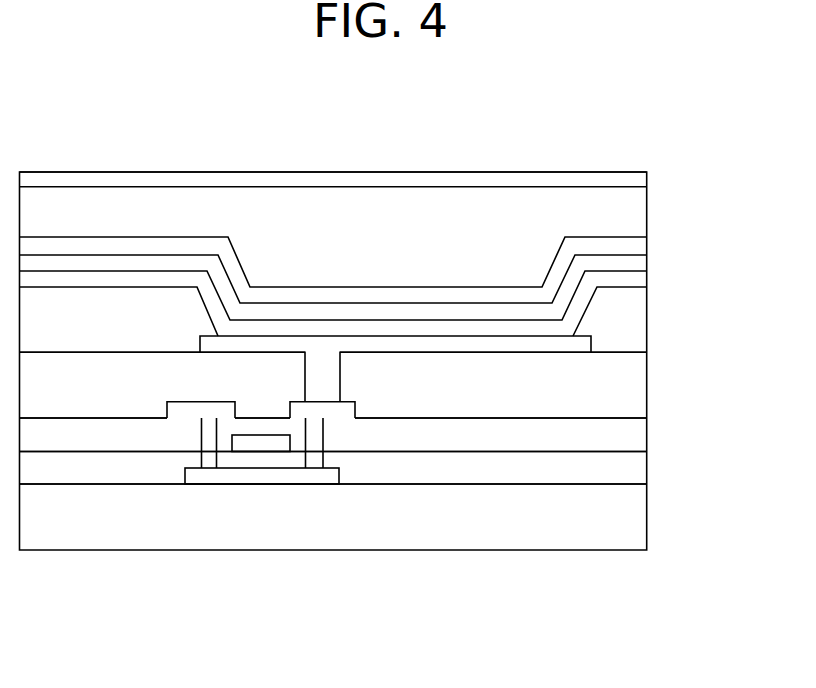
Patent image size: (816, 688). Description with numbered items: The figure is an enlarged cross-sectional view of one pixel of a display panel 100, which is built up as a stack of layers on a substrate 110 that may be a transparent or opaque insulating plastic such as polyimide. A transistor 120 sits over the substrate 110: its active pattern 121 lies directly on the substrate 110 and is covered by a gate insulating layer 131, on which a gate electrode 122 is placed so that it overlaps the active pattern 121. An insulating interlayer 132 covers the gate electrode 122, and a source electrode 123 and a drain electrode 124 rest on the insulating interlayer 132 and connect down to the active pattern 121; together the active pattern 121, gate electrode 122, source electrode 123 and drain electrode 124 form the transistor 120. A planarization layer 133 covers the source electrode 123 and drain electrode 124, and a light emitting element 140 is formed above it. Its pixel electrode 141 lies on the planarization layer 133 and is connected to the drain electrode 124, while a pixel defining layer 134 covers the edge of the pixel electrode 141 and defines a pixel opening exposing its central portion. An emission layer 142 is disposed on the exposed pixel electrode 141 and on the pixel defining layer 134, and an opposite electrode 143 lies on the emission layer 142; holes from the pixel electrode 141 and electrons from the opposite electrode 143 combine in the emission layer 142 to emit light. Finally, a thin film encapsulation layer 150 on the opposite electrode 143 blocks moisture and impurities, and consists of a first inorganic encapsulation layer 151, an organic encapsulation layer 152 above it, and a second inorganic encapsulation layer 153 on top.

The display panel 100 is at (657, 119).
The substrate 110 is at (647, 521).
The transistor 120 is at (262, 529).
The active pattern 121 is at (239, 477).
The gate electrode 122 is at (277, 445).
The source electrode 123 is at (192, 410).
The drain electrode 124 is at (337, 410).
The gate insulating layer 131 is at (647, 467).
The insulating interlayer 132 is at (647, 434).
The planarization layer 133 is at (647, 387).
The pixel defining layer 134 is at (647, 323).
The light emitting element 140 is at (333, 454).
The pixel electrode 141 is at (433, 345).
The emission layer 142 is at (483, 329).
The opposite electrode 143 is at (532, 313).
The thin film encapsulation layer 150 is at (401, 227).
The first inorganic encapsulation layer 151 is at (647, 247).
The organic encapsulation layer 152 is at (647, 212).
The second inorganic encapsulation layer 153 is at (647, 177).